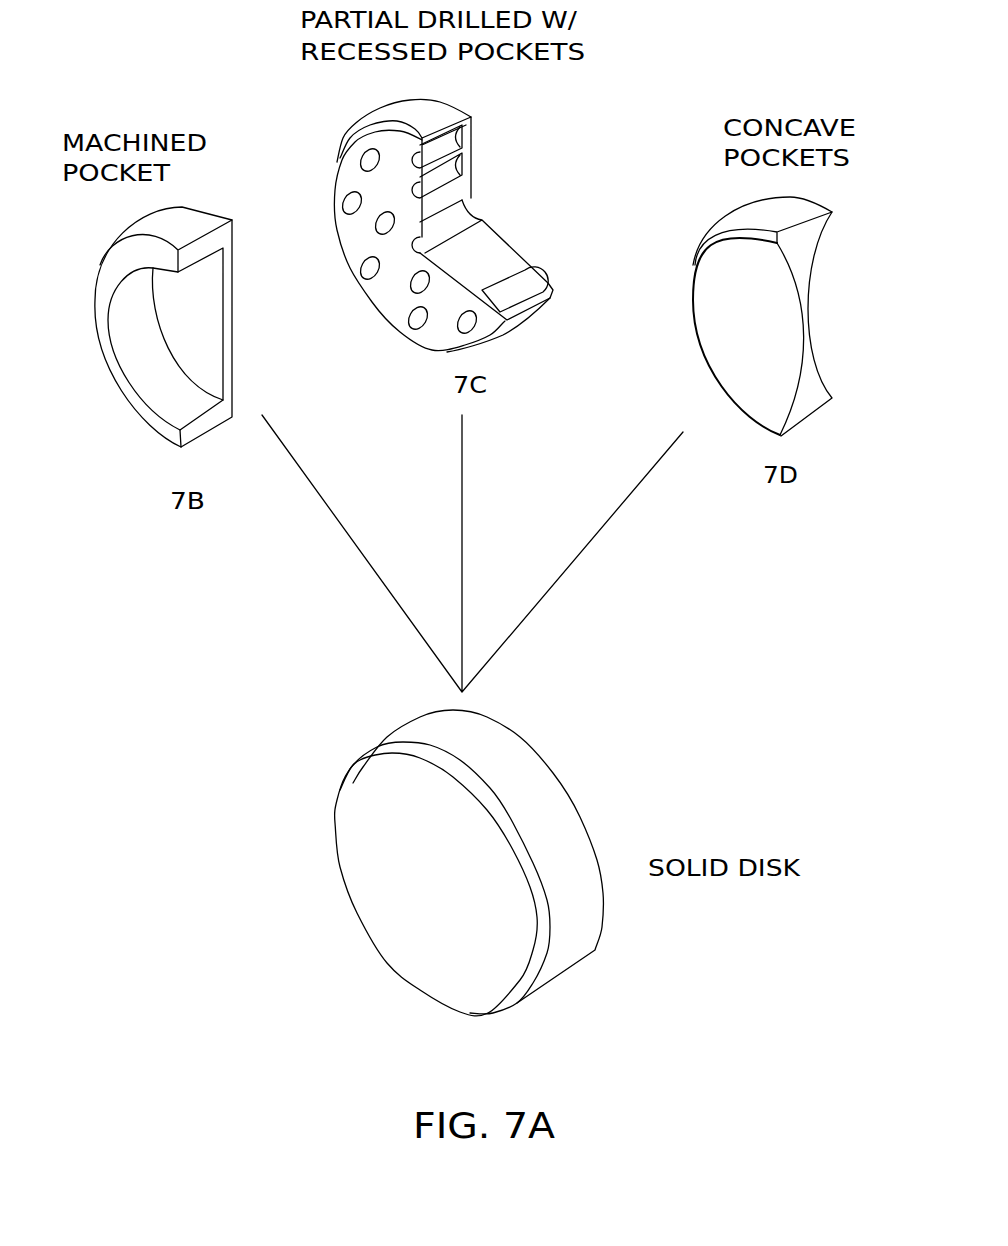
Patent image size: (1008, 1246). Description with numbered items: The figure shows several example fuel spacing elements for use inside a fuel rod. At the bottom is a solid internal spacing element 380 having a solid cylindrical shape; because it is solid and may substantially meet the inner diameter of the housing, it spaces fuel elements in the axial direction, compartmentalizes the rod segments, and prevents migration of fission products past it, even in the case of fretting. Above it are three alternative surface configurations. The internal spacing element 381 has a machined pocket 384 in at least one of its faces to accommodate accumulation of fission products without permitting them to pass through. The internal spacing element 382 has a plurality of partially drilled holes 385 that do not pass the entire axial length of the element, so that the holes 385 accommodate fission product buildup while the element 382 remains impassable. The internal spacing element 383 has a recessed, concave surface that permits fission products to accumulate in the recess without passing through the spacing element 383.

In FIG. 7A, the internal spacing element 380 is at (408, 927).
In FIG. 7B, the internal spacing element 381 is at (78, 294).
In FIG. 7C, the internal spacing element 382 is at (553, 144).
In FIG. 7D, the internal spacing element 383 is at (896, 294).
In FIG. 7B, the machined pocket 384 is at (205, 333).
In FIG. 7C, the partially drilled holes 385 is at (432, 197).